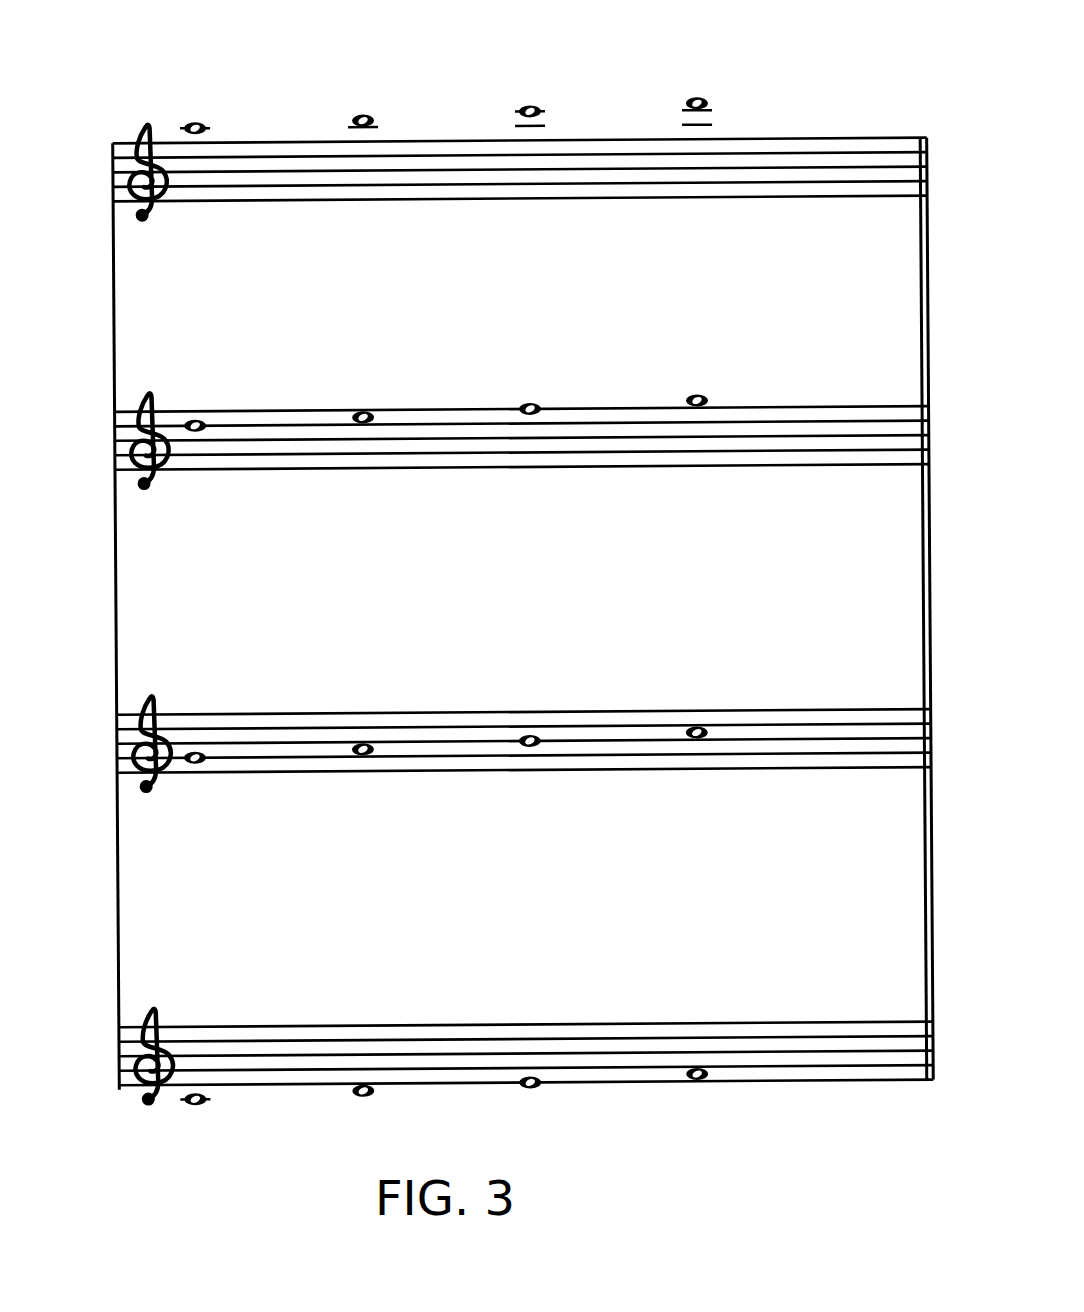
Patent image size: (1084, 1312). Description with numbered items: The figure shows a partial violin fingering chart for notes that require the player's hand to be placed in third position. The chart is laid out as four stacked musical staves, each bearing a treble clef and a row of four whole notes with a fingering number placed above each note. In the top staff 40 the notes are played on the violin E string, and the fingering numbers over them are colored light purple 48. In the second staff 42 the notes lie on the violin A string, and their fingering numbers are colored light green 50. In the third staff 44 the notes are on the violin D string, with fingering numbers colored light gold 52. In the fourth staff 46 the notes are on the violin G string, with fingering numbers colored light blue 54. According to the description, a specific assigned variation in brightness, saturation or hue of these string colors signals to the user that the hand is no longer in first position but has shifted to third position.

The top staff 40 is at (116, 168).
The second staff 42 is at (116, 436).
The third staff 44 is at (116, 740).
The fourth staff 46 is at (116, 1040).
The light purple 48 is at (443, 74).
The light green 50 is at (446, 365).
The light gold 52 is at (443, 688).
The light blue 54 is at (445, 1022).